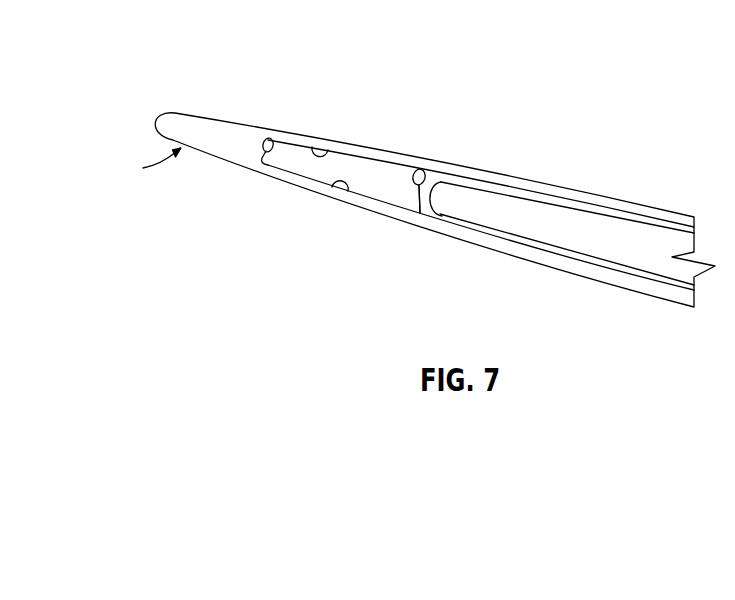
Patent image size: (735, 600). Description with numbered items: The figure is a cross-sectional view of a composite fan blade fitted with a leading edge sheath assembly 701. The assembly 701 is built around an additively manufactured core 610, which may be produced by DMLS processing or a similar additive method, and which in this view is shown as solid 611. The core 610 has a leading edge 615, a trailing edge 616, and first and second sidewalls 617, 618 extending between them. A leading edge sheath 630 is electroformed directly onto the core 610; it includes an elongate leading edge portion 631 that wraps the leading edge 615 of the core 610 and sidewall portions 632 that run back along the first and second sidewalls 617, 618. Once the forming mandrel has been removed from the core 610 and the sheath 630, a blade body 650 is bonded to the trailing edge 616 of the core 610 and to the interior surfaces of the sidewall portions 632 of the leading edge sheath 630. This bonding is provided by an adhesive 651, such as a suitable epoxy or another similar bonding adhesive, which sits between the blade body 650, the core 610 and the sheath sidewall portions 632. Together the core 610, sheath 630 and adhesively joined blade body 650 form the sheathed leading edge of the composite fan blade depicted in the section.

The leading edge sheath assembly 701 is at (139, 166).
The leading edge sheath 630 is at (173, 123).
The elongate leading edge portion 631 is at (233, 143).
The sidewall portions 632 is at (605, 275).
The core 610 is at (354, 168).
The solid 611 is at (300, 168).
The leading edge 615 is at (267, 138).
The trailing edge 616 is at (416, 169).
The first sidewall 617 is at (347, 191).
The second sidewall 618 is at (328, 143).
The blade body 650 is at (507, 200).
The adhesive 651 is at (423, 212).